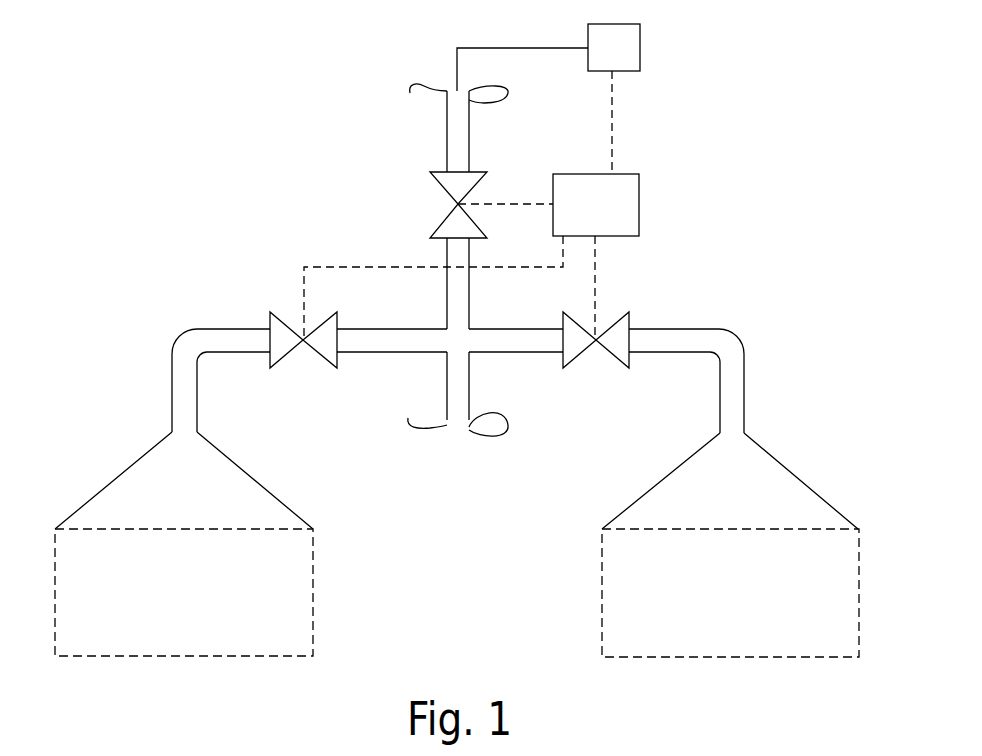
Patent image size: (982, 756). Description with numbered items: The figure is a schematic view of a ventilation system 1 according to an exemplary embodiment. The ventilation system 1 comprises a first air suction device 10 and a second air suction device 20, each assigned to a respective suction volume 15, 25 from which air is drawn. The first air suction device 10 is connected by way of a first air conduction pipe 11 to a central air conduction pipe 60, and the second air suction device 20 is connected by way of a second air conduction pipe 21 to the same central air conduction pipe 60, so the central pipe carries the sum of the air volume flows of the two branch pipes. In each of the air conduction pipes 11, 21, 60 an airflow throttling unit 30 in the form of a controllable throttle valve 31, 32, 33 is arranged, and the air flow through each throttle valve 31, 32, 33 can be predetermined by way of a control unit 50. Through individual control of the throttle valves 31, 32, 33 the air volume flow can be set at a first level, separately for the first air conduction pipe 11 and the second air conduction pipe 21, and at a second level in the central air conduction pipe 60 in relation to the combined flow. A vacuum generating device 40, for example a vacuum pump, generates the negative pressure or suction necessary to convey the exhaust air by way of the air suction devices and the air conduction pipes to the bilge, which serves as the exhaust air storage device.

The ventilation system 1 is at (238, 71).
The first air suction device 10 is at (270, 490).
The first air conduction pipe 11 is at (178, 342).
The suction volume 15 is at (305, 612).
The second air suction device 20 is at (797, 473).
The second air conduction pipe 21 is at (733, 337).
The suction volume 25 is at (613, 602).
The airflow throttling unit 30 is at (466, 269).
The throttle valve 31 is at (325, 358).
The throttle valve 32 is at (580, 353).
The throttle valve 33 is at (487, 175).
The vacuum generating device 40 is at (622, 48).
The control unit 50 is at (622, 202).
The central air conduction pipe 60 is at (445, 258).